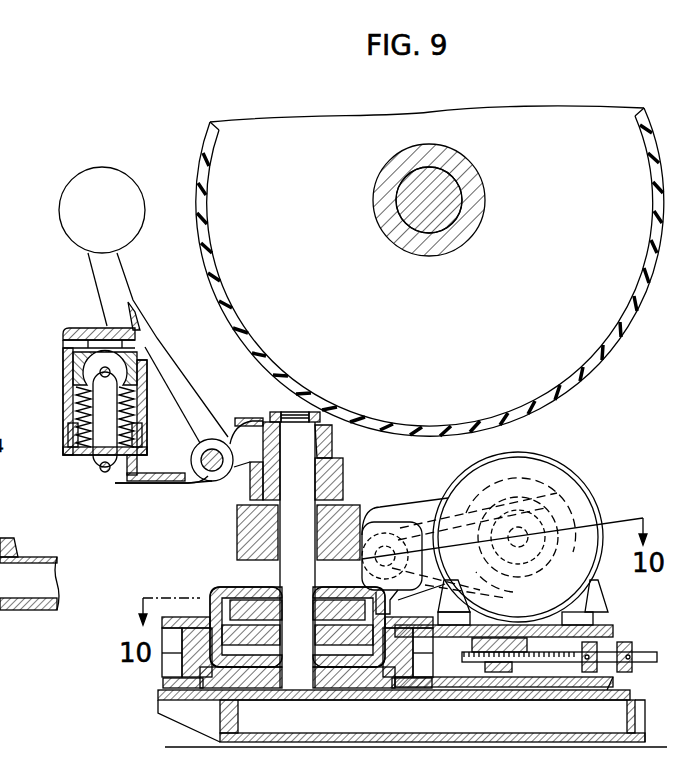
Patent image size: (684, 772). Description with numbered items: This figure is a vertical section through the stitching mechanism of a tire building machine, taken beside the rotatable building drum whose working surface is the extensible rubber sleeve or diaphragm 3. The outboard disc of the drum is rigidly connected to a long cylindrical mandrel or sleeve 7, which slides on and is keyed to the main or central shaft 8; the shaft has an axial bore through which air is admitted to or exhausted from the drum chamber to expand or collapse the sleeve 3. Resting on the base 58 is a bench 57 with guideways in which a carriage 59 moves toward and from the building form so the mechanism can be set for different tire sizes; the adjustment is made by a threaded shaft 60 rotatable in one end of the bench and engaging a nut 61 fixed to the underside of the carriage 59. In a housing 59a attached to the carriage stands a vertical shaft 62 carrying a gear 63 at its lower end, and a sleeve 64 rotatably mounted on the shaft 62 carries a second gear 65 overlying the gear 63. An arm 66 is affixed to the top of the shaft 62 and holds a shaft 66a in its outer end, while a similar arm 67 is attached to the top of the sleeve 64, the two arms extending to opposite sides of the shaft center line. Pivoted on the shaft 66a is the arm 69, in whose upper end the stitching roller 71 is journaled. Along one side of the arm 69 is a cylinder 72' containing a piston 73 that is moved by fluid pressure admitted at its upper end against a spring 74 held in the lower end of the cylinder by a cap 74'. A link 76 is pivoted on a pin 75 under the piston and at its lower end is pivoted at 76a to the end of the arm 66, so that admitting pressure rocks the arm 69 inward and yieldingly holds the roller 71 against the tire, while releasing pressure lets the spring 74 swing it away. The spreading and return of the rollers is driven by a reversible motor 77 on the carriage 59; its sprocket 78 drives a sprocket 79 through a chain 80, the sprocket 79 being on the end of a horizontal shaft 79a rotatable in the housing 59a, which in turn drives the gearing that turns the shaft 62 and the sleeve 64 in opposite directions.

The cylindrical sleeve or diaphragm 3 is at (604, 359).
The cylindrical mandrel or sleeve 7 is at (406, 244).
The main or central shaft 8 is at (408, 198).
The bench 57 is at (0, 505).
The base 58 is at (47, 556).
The carriage 59 is at (583, 626).
The housing 59a is at (238, 531).
The threaded shaft 60 is at (548, 662).
The nut 61 is at (506, 672).
The vertical shaft 62 is at (307, 478).
The gear 63 is at (250, 645).
The sleeve 64 is at (342, 501).
The second gear 65 is at (243, 606).
The arm 66 is at (325, 432).
The shaft 66a is at (200, 481).
The arm 67 is at (256, 488).
The arm 69 is at (90, 287).
The stitching roller 71 is at (66, 204).
The cylinder 72' is at (78, 341).
The piston 73 is at (70, 365).
The spring 74 is at (80, 417).
The cap 74' is at (81, 438).
The pin 75 is at (100, 374).
The link 76 is at (98, 453).
The pivot 76a is at (102, 477).
The reversible motor 77 is at (568, 488).
The sprocket 78 is at (532, 528).
The sprocket 79 is at (452, 506).
The horizontal shaft 79a is at (392, 548).
The chain 80 is at (484, 544).